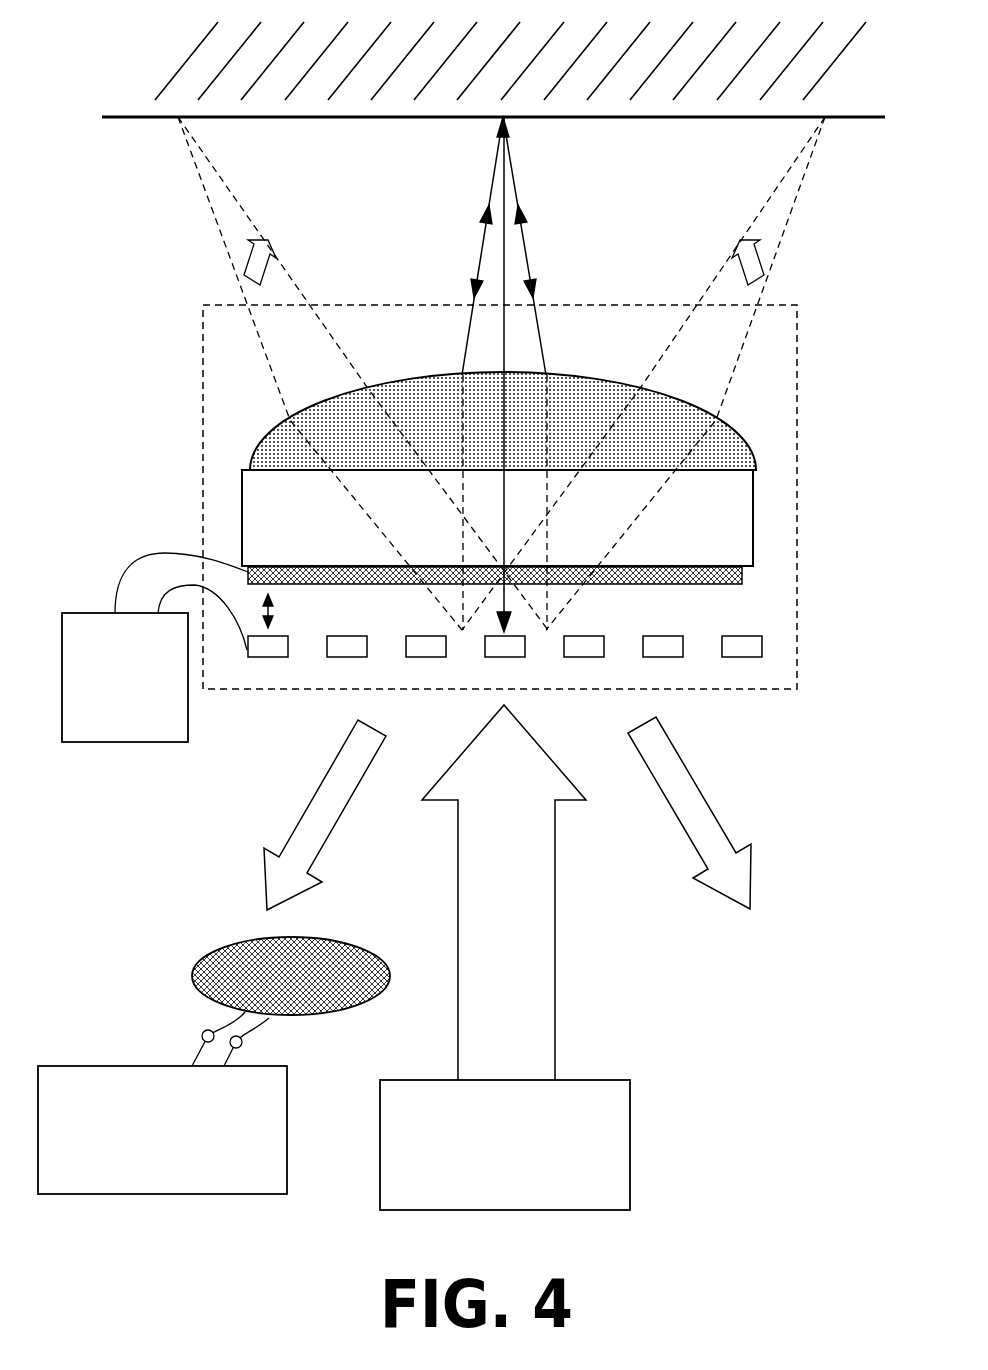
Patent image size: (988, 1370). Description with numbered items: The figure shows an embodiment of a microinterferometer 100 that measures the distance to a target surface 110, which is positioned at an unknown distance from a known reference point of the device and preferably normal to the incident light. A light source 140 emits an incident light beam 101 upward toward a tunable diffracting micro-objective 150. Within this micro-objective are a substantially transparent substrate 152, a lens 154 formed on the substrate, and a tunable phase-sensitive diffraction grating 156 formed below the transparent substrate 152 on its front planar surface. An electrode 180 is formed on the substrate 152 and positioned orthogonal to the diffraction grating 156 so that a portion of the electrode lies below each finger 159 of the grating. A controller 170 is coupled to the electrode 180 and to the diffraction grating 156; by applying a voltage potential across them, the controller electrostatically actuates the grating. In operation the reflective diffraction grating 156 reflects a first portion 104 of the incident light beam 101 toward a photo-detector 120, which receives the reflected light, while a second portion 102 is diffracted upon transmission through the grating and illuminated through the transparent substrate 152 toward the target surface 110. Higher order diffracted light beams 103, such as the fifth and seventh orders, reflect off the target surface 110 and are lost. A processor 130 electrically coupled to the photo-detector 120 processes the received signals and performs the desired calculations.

The microinterferometer 100 is at (827, 802).
The incident light beam 101 is at (555, 979).
The second portion of the incident light beam 102 is at (525, 237).
The higher order diffracted light beams 103 is at (775, 194).
The first portion of the incident light beam 104 is at (305, 807).
The target surface 110 is at (160, 54).
The photo-detector 120 is at (192, 979).
The processor 130 is at (287, 1190).
The light source 140 is at (622, 1198).
The tunable diffracting micro-objective 150 is at (801, 399).
The transparent substrate 152 is at (723, 551).
The lens 154 is at (288, 421).
The tunable phase-sensitive diffraction grating 156 is at (657, 688).
The finger 159 is at (325, 658).
The controller 170 is at (186, 733).
The electrode 180 is at (742, 572).